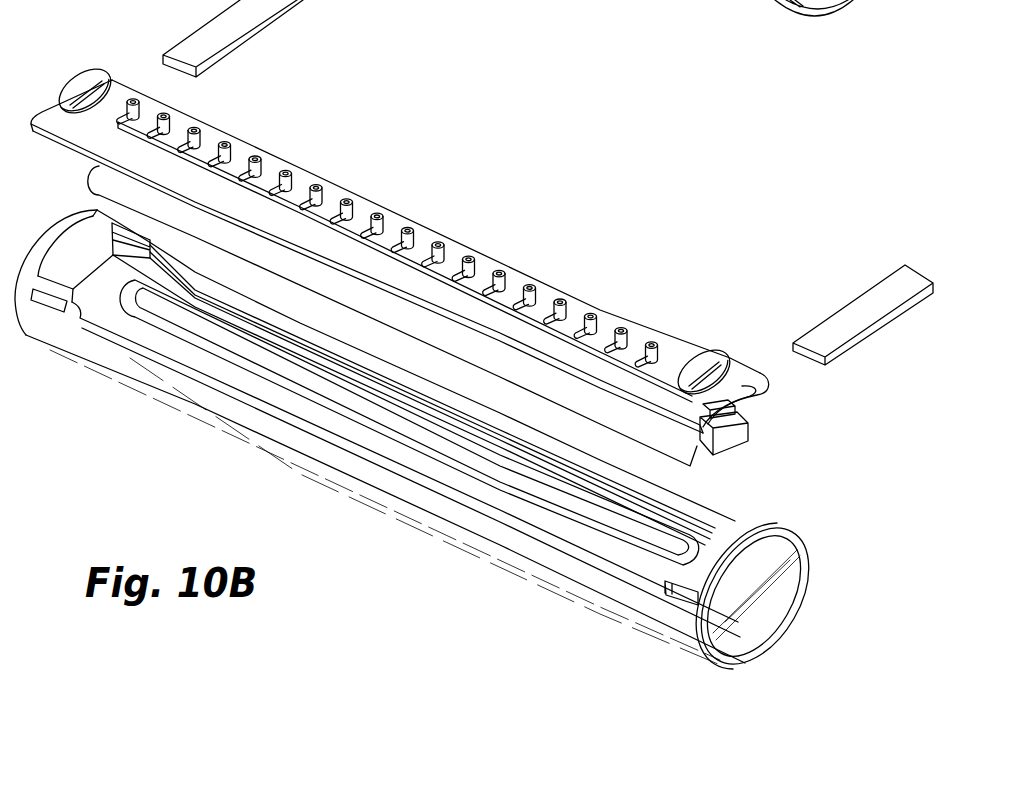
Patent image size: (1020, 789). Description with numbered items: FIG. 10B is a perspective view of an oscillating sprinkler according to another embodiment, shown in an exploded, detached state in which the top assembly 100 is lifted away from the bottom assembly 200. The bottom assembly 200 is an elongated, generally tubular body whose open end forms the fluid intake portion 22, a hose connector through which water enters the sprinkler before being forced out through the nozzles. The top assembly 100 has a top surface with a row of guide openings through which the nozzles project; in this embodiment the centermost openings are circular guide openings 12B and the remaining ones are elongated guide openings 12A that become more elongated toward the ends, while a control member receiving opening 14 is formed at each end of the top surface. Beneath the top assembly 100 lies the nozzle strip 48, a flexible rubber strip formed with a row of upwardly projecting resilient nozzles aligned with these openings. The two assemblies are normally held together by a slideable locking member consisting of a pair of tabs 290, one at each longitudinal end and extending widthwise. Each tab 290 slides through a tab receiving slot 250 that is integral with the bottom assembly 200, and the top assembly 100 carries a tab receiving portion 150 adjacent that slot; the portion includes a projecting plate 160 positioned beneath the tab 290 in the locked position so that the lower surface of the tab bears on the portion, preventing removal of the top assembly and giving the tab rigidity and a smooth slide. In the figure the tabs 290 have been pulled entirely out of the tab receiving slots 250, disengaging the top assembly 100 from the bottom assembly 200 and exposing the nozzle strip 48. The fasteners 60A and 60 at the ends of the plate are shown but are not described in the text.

The fastener screw 60A is at (92, 82).
The control member receiving opening 14 is at (245, 147).
The circular guide opening 12B is at (415, 238).
The nozzle strip 48 is at (474, 268).
The elongated guide opening 12A is at (600, 330).
The fastener screw 60 is at (716, 339).
The tab 290 is at (862, 305).
The top assembly 100 is at (820, 403).
The tab receiving portion 150 is at (756, 454).
The projecting plate 160 is at (686, 440).
The bottom assembly 200 is at (457, 351).
The tab receiving slot 250 is at (668, 592).
The fluid intake portion 22 is at (690, 638).